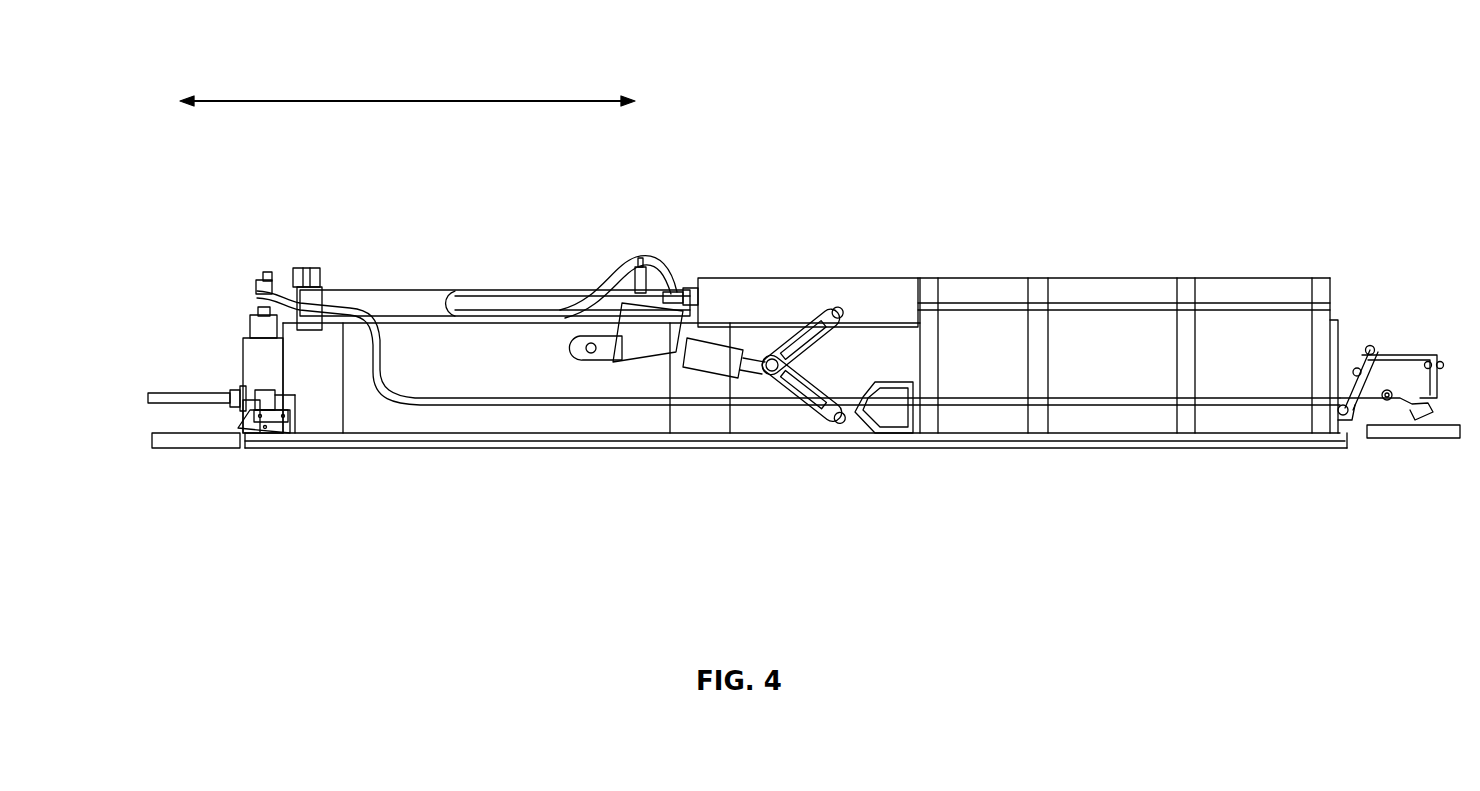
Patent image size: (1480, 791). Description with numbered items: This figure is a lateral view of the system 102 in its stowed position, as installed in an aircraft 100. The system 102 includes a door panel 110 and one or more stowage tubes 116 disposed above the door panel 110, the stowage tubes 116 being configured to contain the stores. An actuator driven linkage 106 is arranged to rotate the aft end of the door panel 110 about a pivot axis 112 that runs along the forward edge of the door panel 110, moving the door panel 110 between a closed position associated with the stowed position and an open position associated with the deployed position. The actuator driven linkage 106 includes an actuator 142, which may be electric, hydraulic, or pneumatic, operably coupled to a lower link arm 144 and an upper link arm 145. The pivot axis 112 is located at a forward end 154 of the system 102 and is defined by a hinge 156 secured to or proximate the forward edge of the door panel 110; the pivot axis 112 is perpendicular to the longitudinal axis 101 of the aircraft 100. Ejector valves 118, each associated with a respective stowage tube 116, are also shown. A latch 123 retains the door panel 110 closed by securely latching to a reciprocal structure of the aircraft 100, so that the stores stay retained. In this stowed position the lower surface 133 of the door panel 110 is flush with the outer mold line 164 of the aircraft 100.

The aircraft 100 is at (172, 468).
The longitudinal axis 101 is at (412, 100).
The system 102 is at (222, 203).
The actuator driven linkage 106 is at (635, 383).
The door panel 110 is at (1153, 452).
The pivot axis 112 is at (240, 422).
The stowage tube 116 is at (1122, 290).
The ejector valve 118 is at (370, 286).
The latch 123 is at (1395, 355).
The lower surface 133 is at (1030, 455).
The actuator 142 is at (716, 372).
The lower link arm 144 is at (827, 432).
The upper link arm 145 is at (830, 308).
The forward end 154 is at (135, 413).
The hinge 156 is at (258, 430).
The outer mold line 164 is at (195, 452).